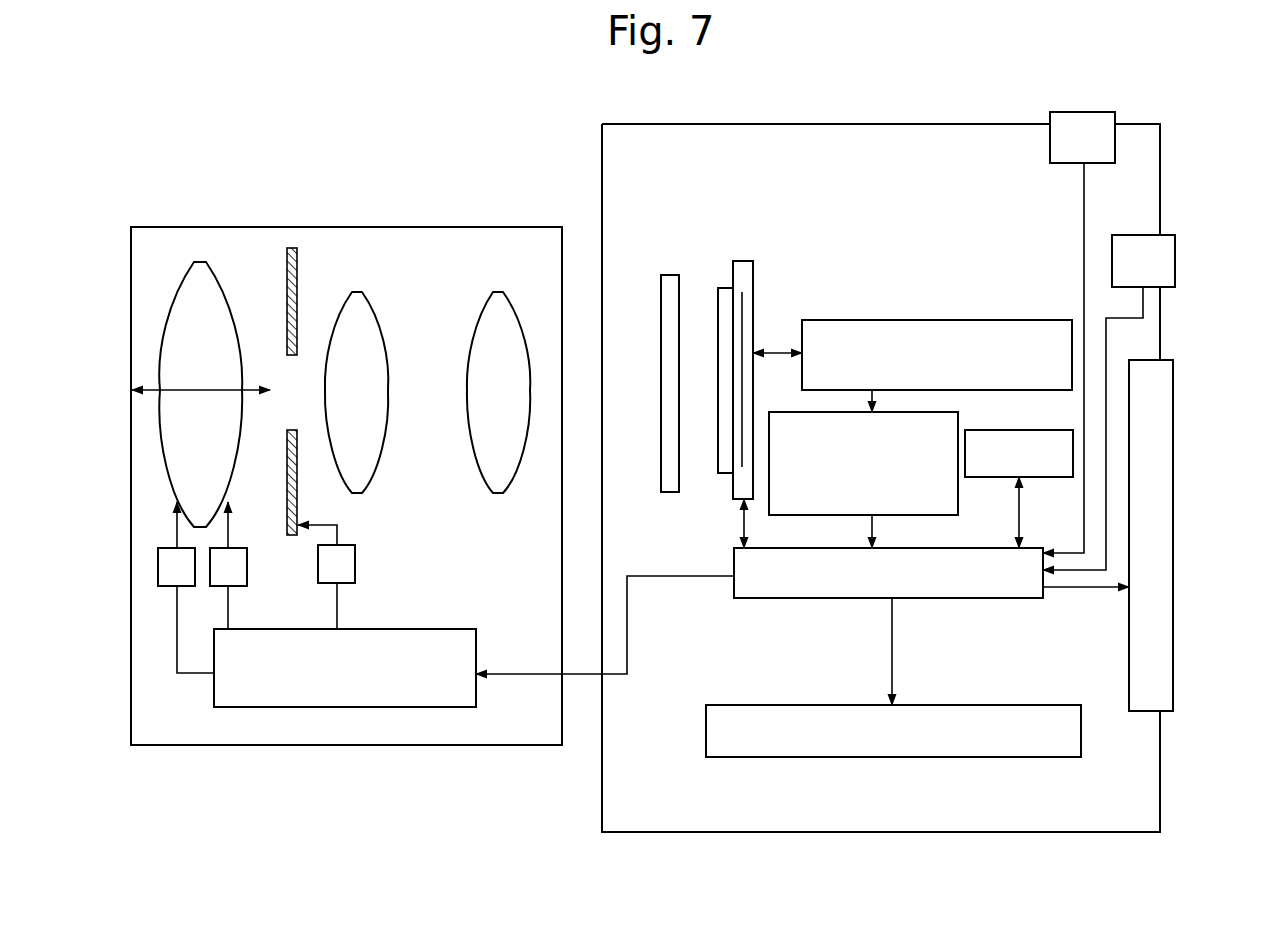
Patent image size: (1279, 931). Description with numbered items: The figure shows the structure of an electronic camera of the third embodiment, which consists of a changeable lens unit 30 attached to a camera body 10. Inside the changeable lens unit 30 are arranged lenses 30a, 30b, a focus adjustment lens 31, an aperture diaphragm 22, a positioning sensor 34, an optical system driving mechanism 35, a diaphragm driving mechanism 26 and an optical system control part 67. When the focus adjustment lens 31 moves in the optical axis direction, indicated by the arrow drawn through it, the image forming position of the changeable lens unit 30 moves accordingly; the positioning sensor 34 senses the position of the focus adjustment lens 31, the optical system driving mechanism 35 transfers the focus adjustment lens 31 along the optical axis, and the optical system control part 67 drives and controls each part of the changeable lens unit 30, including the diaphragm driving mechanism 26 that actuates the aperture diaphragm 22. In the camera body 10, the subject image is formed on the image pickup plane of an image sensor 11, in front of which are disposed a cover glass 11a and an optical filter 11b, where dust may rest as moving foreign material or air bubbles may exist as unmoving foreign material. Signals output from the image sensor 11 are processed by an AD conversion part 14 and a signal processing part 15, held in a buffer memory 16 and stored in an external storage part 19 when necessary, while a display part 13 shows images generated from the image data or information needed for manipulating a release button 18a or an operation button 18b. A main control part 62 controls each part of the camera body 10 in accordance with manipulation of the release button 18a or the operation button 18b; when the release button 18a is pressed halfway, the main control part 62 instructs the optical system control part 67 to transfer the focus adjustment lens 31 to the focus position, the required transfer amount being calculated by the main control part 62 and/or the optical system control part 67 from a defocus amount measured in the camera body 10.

The camera body 10 is at (602, 140).
The image sensor 11 is at (753, 272).
The cover glass 11a is at (725, 292).
The optical filter 11b is at (661, 285).
The display part 13 is at (1155, 473).
The AD conversion part 14 is at (960, 320).
The signal processing part 15 is at (958, 500).
The buffer memory 16 is at (1050, 478).
The release button 18a is at (1090, 121).
The operation button 18b is at (1175, 255).
The external storage part 19 is at (1081, 740).
The aperture diaphragm 22 is at (300, 290).
The diaphragm driving mechanism 26 is at (355, 565).
The changeable lens unit 30 is at (150, 232).
The lens 30a is at (375, 342).
The lens 30b is at (520, 325).
The focus adjustment lens 31 is at (224, 300).
The positioning sensor 34 is at (247, 567).
The optical system driving mechanism 35 is at (158, 570).
The main control part 62 is at (997, 600).
The optical system control part 67 is at (455, 630).